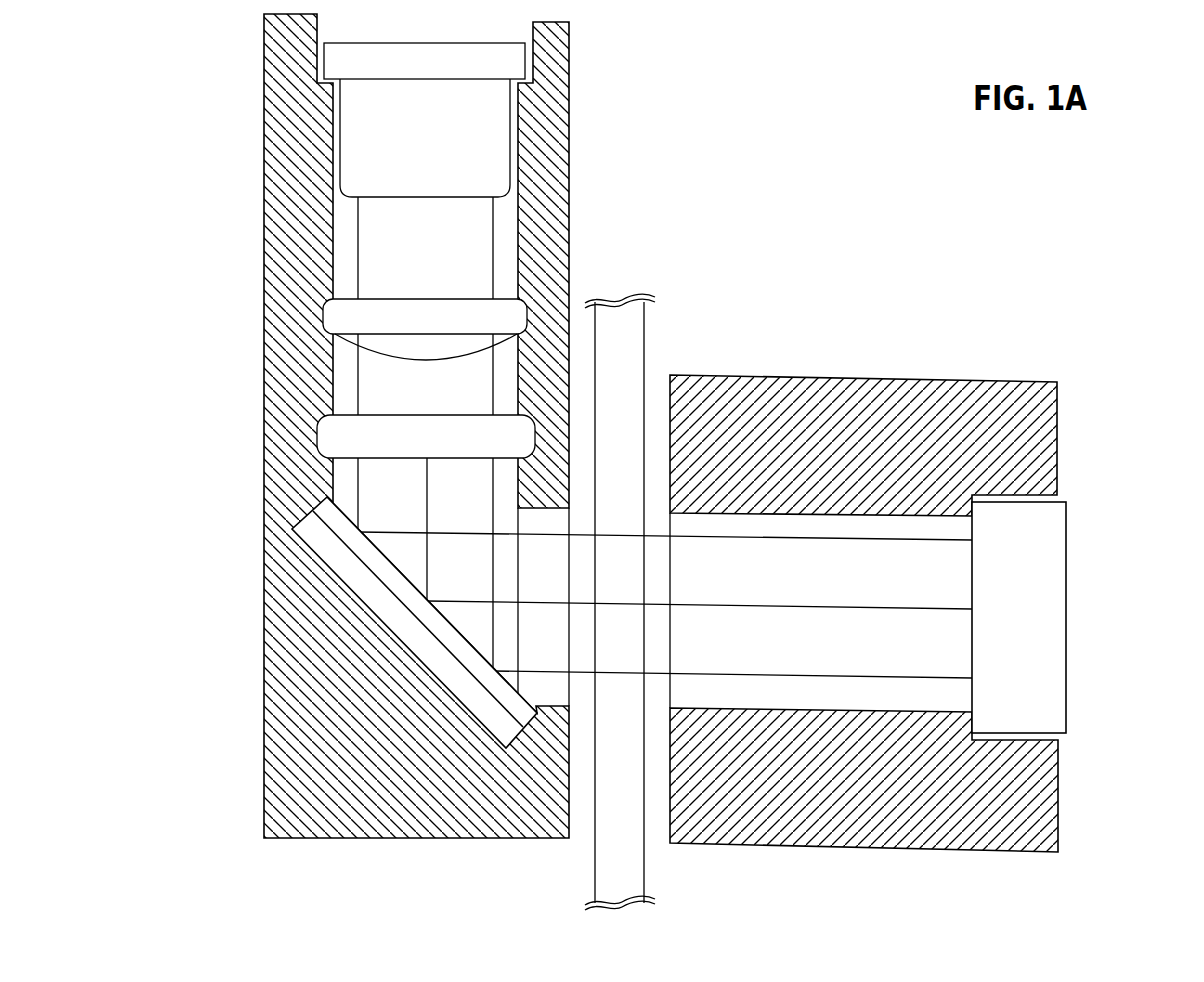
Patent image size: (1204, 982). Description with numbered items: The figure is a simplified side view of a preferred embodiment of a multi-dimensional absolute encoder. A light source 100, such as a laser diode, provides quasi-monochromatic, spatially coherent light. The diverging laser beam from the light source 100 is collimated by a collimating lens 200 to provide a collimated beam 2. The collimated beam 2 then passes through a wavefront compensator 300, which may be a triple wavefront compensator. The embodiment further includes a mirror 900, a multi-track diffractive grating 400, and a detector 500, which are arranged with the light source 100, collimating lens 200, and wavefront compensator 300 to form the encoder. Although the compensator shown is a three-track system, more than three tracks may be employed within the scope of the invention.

The light source 100 is at (467, 148).
The collimating lens 200 is at (348, 308).
The collimated beam 2 is at (367, 393).
The wavefront compensator 300 is at (350, 443).
The multi-track diffractive grating 400 is at (637, 330).
The detector 500 is at (1023, 605).
The mirror 900 is at (383, 563).